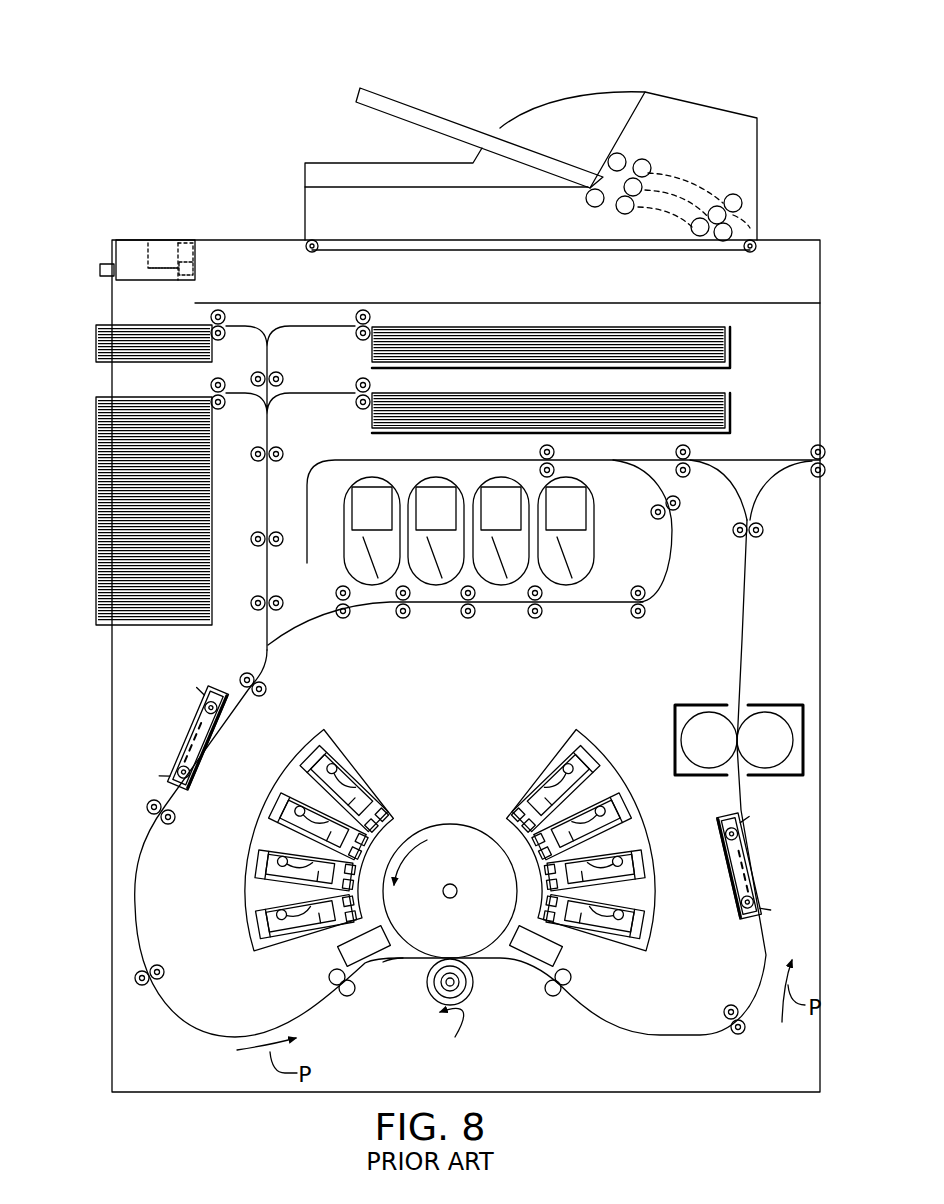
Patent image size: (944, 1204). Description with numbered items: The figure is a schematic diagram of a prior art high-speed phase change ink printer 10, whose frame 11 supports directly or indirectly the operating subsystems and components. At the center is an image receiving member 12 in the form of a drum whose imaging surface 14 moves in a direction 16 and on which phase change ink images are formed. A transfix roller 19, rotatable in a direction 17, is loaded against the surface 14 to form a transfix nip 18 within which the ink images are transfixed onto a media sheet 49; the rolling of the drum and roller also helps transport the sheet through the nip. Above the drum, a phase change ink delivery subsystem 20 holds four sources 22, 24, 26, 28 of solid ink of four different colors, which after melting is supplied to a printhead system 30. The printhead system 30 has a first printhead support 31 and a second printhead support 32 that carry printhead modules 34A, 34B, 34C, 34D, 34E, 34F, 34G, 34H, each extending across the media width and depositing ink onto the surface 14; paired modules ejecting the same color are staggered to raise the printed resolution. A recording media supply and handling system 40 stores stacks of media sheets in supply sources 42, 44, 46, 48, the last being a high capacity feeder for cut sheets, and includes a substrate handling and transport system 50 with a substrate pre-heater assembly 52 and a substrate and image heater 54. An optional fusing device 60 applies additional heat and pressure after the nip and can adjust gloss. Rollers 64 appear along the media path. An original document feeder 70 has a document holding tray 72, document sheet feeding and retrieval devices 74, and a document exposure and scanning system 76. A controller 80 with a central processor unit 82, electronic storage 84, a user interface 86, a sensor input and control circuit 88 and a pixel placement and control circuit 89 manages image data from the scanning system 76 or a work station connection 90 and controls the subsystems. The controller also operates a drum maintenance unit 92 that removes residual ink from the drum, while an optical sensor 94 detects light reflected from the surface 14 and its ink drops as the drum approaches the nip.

The phase change ink printer 10 is at (158, 127).
The frame 11 is at (112, 712).
The image receiving member 12 is at (430, 820).
The imaging surface 14 is at (466, 823).
The direction 16 is at (420, 849).
The direction 17 is at (454, 1037).
The transfix nip 18 is at (414, 971).
The transfix roller 19 is at (484, 983).
The phase change ink delivery subsystem 20 is at (396, 480).
The source of phase change ink 22 is at (361, 524).
The source of phase change ink 24 is at (425, 524).
The source of phase change ink 26 is at (490, 524).
The source of phase change ink 28 is at (555, 524).
The printhead system 30 is at (292, 818).
The first printhead support 31 is at (303, 740).
The second printhead support 32 is at (607, 818).
The printhead module 34A is at (630, 928).
The printhead module 34B is at (630, 872).
The printhead module 34C is at (608, 822).
The printhead module 34D is at (588, 772).
The printhead module 34E is at (312, 772).
The printhead module 34F is at (292, 822).
The printhead module 34G is at (270, 872).
The printhead module 34H is at (270, 928).
The recording media supply and handling system 40 is at (84, 489).
The substrate supply source 42 is at (732, 343).
The substrate supply source 44 is at (732, 408).
The substrate supply source 46 is at (105, 365).
The high capacity paper supply 48 is at (155, 627).
The media sheet 49 is at (397, 963).
The substrate handling and transport system 50 is at (133, 905).
The substrate pre-heater assembly 52 is at (180, 740).
The substrate and image heater 54 is at (756, 846).
The fusing device 60 is at (705, 703).
The feed rollers 64 is at (762, 532).
The original document feeder 70 is at (336, 158).
The document holding tray 72 is at (385, 97).
The document sheet feeding and retrieval devices 74 is at (688, 183).
The document exposure and scanning system 76 is at (592, 251).
The controller 80 is at (154, 252).
The central processor unit 82 is at (116, 244).
The electronic storage 84 is at (168, 275).
The user interface 86 is at (175, 248).
The sensor input and control circuit 88 is at (190, 247).
The pixel placement and control circuit 89 is at (196, 270).
The work station connection 90 is at (100, 268).
The drum maintenance unit 92 is at (560, 955).
The optical sensor 94 is at (340, 955).